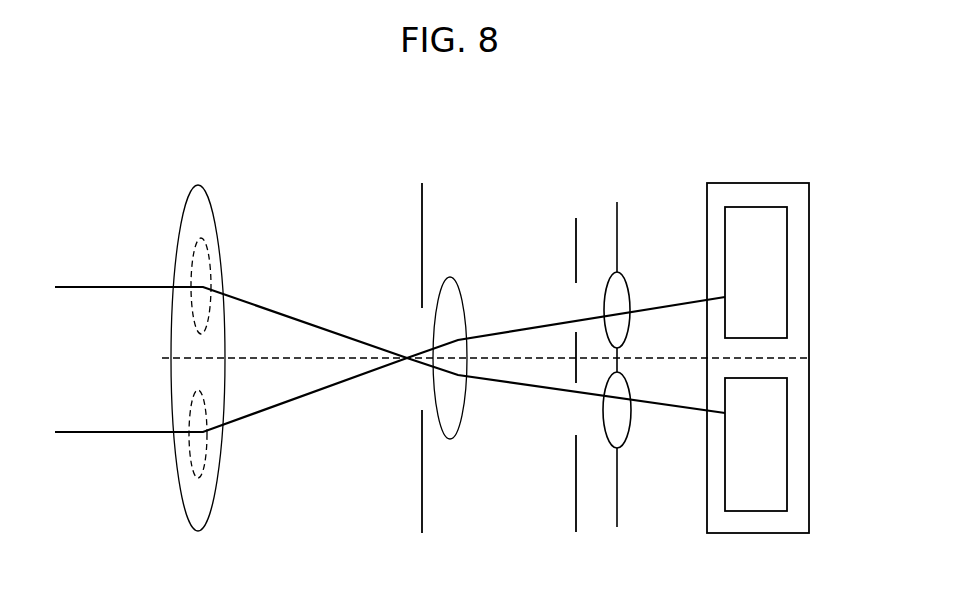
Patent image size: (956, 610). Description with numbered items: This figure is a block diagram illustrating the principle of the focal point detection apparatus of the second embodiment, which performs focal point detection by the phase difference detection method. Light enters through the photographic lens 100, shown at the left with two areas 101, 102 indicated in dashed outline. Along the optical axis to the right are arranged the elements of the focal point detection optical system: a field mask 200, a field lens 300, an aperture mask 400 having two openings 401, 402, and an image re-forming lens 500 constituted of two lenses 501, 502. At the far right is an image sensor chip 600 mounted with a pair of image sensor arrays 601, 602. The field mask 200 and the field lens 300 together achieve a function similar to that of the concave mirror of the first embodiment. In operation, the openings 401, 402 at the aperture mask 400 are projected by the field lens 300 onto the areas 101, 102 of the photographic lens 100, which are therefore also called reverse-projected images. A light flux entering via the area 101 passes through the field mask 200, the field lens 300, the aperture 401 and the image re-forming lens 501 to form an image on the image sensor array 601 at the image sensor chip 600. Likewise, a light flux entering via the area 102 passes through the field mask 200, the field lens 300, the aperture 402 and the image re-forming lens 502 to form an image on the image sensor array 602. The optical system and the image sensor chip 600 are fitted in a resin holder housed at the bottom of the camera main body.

The photographic lens 100 is at (199, 185).
The area of the photographic lens 101 is at (212, 255).
The area of the photographic lens 102 is at (207, 449).
The field mask 200 is at (424, 200).
The field lens 300 is at (452, 277).
The aperture mask 400 is at (575, 230).
The opening 401 is at (544, 417).
The opening 402 is at (544, 302).
The image re-forming lens 500 is at (617, 220).
The image re-forming lens 501 is at (632, 423).
The image re-forming lens 502 is at (631, 296).
The image sensor chip 600 is at (752, 183).
The image sensor array 601 is at (771, 464).
The image sensor array 602 is at (771, 287).